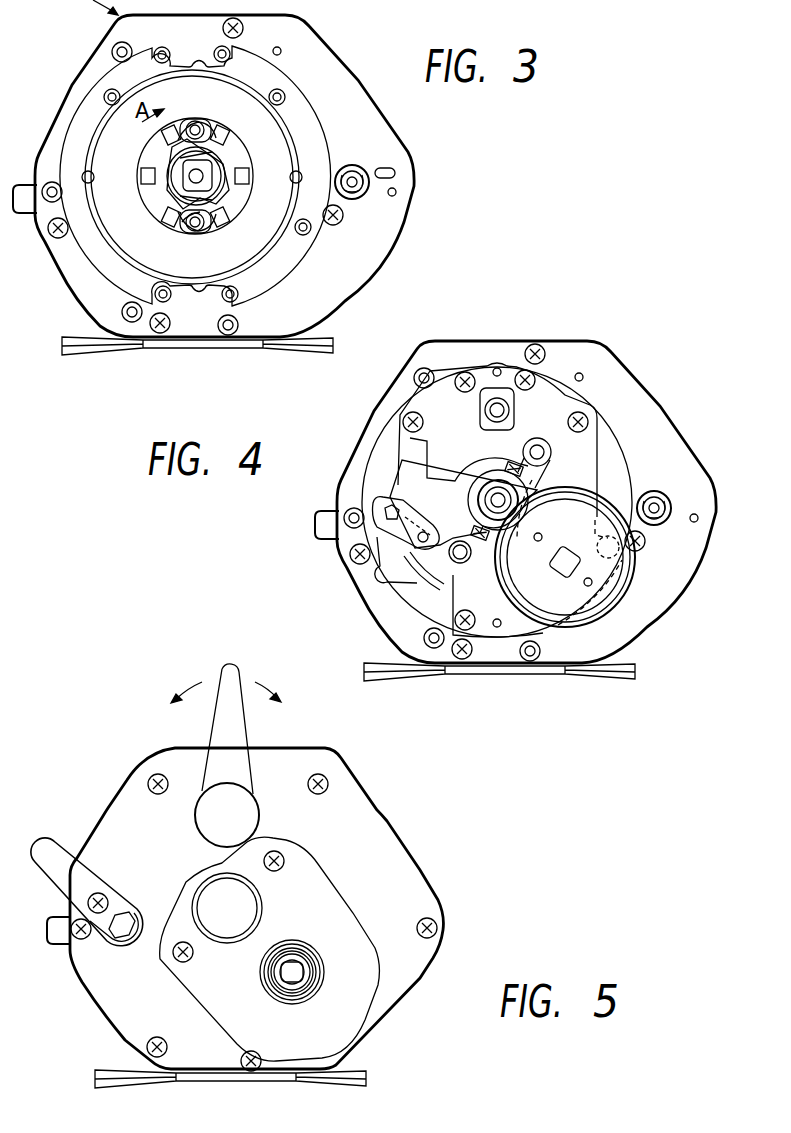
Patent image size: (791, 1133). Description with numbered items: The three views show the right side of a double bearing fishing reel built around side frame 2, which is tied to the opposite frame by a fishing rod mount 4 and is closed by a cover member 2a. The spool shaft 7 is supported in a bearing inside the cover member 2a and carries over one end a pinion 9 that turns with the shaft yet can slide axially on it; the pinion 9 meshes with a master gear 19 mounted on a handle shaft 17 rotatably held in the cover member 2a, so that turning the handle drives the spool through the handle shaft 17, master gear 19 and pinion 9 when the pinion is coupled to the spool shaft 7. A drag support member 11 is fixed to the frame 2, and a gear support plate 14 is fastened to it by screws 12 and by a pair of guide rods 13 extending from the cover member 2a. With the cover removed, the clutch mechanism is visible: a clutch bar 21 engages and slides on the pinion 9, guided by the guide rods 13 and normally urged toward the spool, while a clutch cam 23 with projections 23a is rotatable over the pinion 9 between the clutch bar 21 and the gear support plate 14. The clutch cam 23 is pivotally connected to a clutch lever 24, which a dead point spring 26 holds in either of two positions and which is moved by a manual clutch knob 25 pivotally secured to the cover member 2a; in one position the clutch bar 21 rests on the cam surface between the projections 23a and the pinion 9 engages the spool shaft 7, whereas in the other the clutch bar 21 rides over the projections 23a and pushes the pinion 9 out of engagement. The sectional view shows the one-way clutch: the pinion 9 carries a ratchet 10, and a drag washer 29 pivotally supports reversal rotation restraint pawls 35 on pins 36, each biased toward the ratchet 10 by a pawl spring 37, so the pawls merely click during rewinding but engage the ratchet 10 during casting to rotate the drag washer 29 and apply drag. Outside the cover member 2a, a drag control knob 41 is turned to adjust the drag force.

In FIG. 4, the side frame 2 is at (597, 340).
In FIG. 5, the side frame 2 is at (345, 761).
In FIG. 5, the cover member 2a is at (366, 828).
In FIG. 3, the fishing rod mount 4 is at (63, 343).
In FIG. 4, the fishing rod mount 4 is at (620, 670).
In FIG. 5, the fishing rod mount 4 is at (357, 1079).
In FIG. 3, the spool shaft 7 is at (198, 175).
In FIG. 4, the spool shaft 7 is at (500, 503).
In FIG. 3, the pinion 9 is at (183, 197).
In FIG. 4, the pinion 9 is at (500, 508).
In FIG. 3, the ratchet 10 is at (182, 178).
In FIG. 3, the drag support member 11 is at (297, 108).
In FIG. 4, the drag support member 11 is at (612, 457).
In FIG. 4, the screws 12 is at (582, 410).
In FIG. 4, the guide rods 13 is at (537, 445).
In FIG. 4, the gear support plate 14 is at (448, 402).
In FIG. 4, the handle shaft 17 is at (560, 563).
In FIG. 5, the handle shaft 17 is at (296, 973).
In FIG. 4, the master gear 19 is at (623, 597).
In FIG. 4, the clutch bar 21 is at (540, 465).
In FIG. 4, the clutch cam 23 is at (452, 483).
In FIG. 4, the projections 23a is at (517, 463).
In FIG. 4, the clutch lever 24 is at (380, 508).
In FIG. 5, the manual clutch knob 25 is at (48, 858).
In FIG. 4, the dead point spring 26 is at (375, 575).
In FIG. 3, the drag washer 29 is at (182, 227).
In FIG. 3, the reversal rotation restraint pawls 35 is at (188, 125).
In FIG. 3, the pins 36 is at (200, 125).
In FIG. 3, the pawl spring 37 is at (217, 133).
In FIG. 5, the drag control knob 41 is at (225, 678).